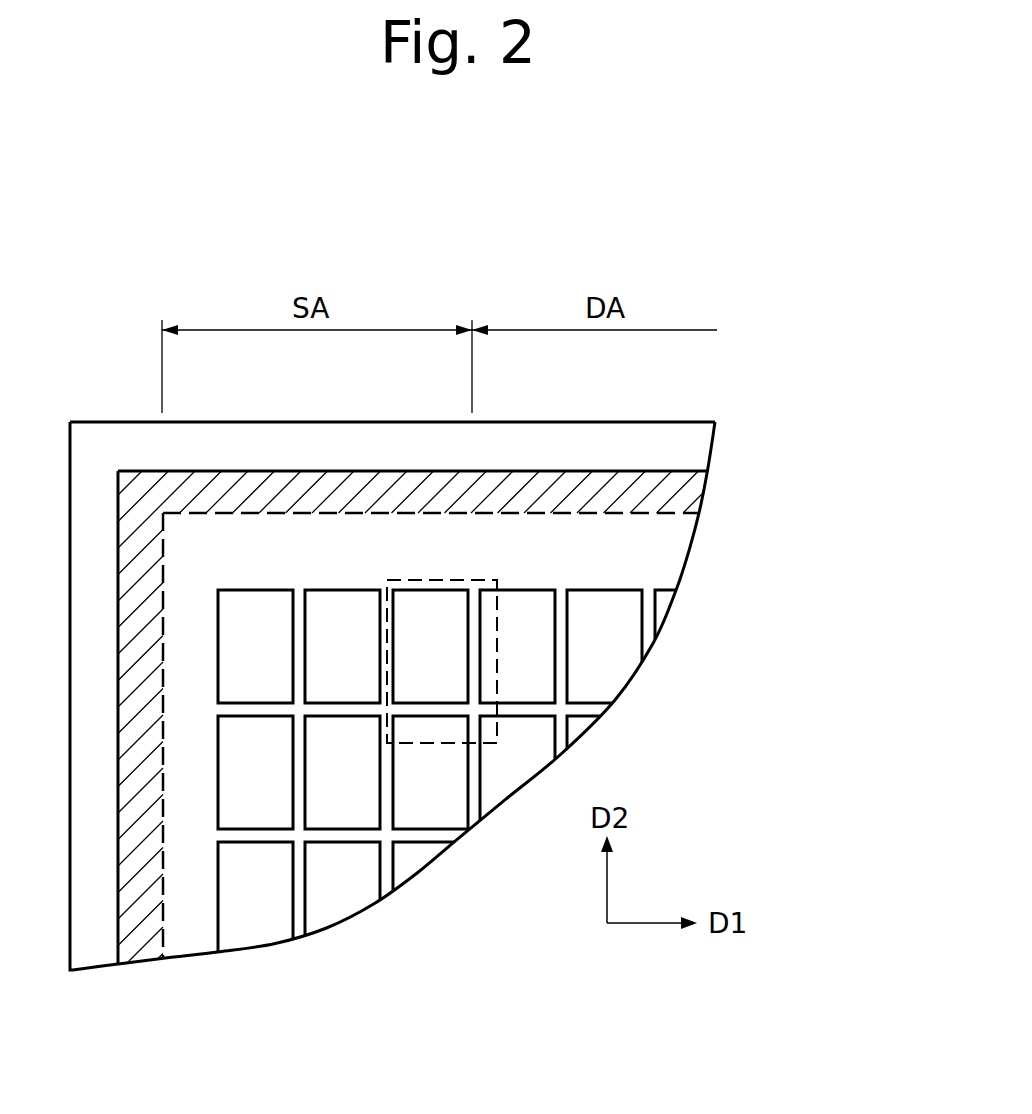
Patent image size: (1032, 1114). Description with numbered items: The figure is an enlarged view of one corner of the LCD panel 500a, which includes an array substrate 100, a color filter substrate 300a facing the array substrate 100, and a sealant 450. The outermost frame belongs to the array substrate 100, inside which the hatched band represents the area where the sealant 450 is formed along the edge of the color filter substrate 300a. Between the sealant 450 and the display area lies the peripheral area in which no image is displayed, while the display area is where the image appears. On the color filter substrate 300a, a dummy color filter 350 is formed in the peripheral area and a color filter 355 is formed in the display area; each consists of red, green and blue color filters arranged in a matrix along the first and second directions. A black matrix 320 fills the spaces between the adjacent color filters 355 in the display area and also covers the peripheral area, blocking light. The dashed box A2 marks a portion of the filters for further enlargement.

The array substrate 100 is at (643, 418).
The color filter substrate 300a is at (645, 465).
The LCD panel 500a is at (838, 385).
The black matrix 320 is at (680, 542).
The dummy color filter 350 is at (467, 575).
The color filter 355 is at (684, 570).
The sealant 450 is at (147, 945).
The region A2 is at (470, 577).